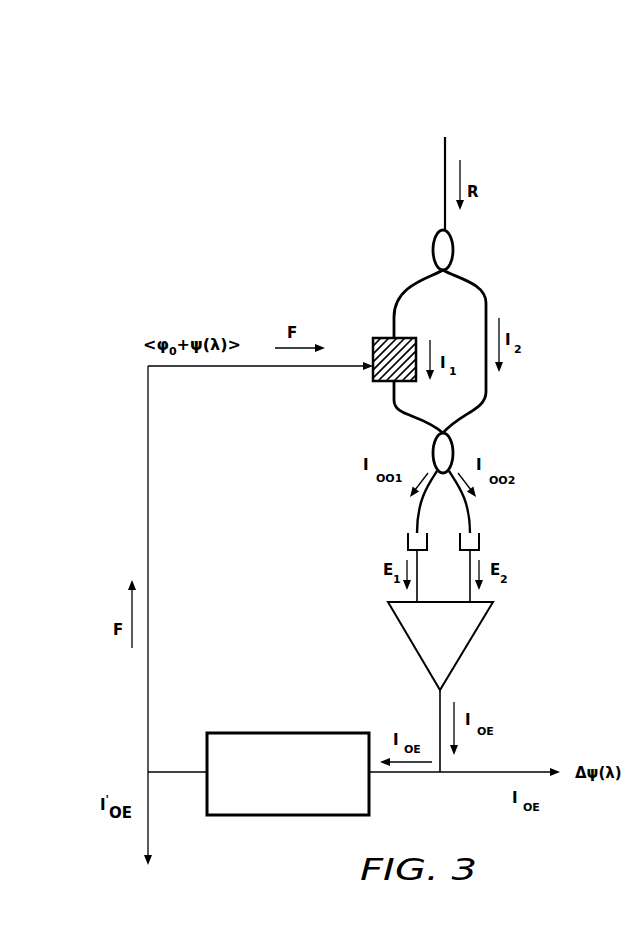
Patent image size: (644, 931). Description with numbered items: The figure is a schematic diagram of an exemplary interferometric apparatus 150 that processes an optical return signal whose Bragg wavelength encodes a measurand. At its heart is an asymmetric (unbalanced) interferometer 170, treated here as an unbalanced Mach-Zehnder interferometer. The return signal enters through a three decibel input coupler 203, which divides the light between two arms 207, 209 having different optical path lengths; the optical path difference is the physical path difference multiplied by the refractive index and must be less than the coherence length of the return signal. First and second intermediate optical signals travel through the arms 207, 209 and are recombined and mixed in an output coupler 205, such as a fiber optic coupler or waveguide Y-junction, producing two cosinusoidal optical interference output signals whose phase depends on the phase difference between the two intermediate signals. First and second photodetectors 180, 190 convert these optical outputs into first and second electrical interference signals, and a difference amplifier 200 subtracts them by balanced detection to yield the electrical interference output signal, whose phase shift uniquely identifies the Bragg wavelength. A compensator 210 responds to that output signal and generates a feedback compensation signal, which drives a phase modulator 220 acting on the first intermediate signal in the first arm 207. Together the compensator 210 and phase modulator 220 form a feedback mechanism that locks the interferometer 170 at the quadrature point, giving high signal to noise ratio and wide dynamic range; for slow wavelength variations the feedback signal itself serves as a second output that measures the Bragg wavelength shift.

The interferometric apparatus 150 is at (238, 128).
The asymmetric (unbalanced) interferometer 170 is at (490, 326).
The first photodetector 180 is at (407, 540).
The second photodetector 190 is at (479, 543).
The difference amplifier 200 is at (455, 640).
The 3 db input coupler 203 is at (432, 247).
The output coupler 205 is at (458, 442).
The first arm 207 is at (415, 285).
The second arm 209 is at (487, 393).
The compensator 210 is at (258, 747).
The phase modulator 220 is at (373, 343).